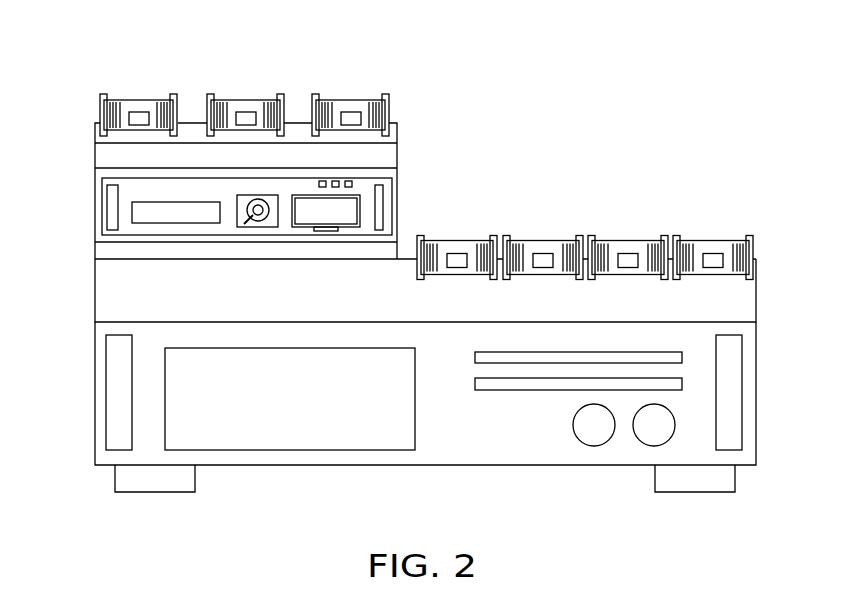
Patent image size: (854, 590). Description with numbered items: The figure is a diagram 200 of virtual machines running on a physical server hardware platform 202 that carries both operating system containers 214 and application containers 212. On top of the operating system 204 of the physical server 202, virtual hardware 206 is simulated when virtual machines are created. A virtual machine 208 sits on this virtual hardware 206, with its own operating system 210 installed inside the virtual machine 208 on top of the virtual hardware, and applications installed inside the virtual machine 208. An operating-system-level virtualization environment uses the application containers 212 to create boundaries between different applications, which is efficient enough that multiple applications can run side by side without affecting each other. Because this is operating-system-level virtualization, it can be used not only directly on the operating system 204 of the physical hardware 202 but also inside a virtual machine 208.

The diagram 200 is at (645, 110).
The physical server hardware platform 202 is at (95, 390).
The operating system 204 is at (95, 298).
The virtual hardware 206 is at (95, 252).
The virtual machine 208 is at (95, 218).
The operating system 210 is at (95, 155).
The application containers 212 is at (140, 98).
The operating system containers 214 is at (757, 446).